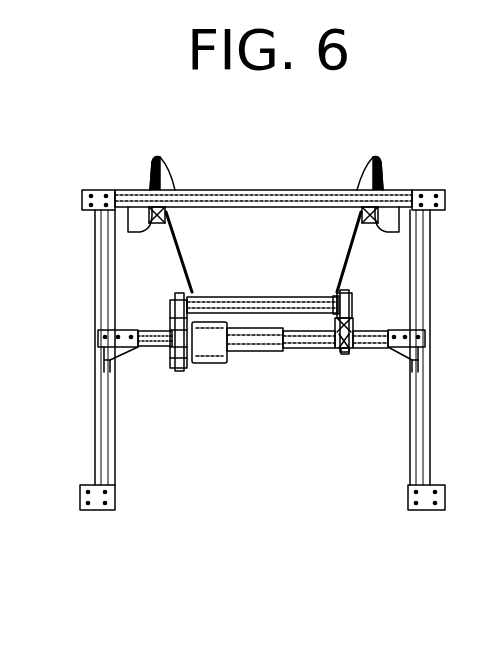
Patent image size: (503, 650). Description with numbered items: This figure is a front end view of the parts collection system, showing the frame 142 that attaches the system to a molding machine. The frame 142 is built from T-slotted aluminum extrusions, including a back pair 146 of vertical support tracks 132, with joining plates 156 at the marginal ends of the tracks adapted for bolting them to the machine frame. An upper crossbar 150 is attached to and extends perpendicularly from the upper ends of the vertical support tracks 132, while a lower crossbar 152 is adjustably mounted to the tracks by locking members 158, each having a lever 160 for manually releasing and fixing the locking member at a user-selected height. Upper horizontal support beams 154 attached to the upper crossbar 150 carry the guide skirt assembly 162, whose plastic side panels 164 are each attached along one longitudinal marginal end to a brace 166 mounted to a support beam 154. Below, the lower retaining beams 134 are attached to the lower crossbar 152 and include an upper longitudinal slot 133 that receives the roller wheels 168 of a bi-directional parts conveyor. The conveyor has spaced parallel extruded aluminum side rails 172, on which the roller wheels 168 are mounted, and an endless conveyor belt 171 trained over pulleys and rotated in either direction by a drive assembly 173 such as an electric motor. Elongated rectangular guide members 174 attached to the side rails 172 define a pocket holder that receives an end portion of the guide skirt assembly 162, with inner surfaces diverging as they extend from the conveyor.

The vertical support tracks 132 is at (115, 440).
The upper longitudinal slot 133 is at (346, 354).
The lower retaining beams 134 is at (170, 318).
The frame 142 is at (283, 143).
The back pair of vertical support tracks 146 is at (440, 292).
The upper crossbar 150 is at (400, 190).
The lower crossbar 152 is at (303, 351).
The upper horizontal support beams 154 is at (128, 232).
The joining plates 156 is at (85, 190).
The locking members 158 is at (98, 338).
The lever 160 is at (110, 358).
The guide skirt assembly 162 is at (178, 160).
The side panels 164 is at (175, 172).
The brace 166 is at (150, 208).
The roller wheels 168 is at (351, 296).
The endless conveyor belt 171 is at (209, 297).
The side rails 172 is at (178, 298).
The drive assembly 173 is at (241, 348).
The guide members 174 is at (178, 278).